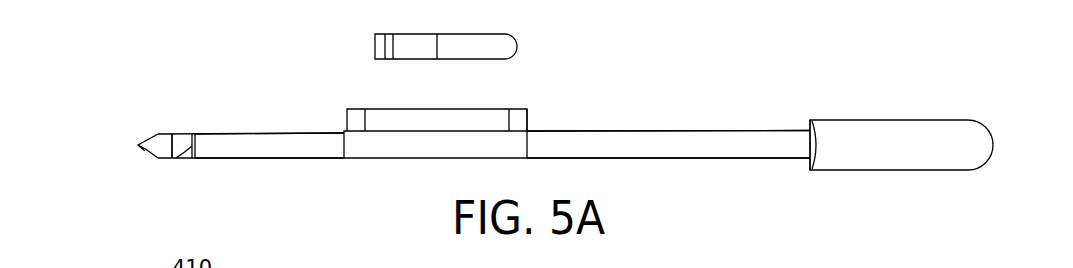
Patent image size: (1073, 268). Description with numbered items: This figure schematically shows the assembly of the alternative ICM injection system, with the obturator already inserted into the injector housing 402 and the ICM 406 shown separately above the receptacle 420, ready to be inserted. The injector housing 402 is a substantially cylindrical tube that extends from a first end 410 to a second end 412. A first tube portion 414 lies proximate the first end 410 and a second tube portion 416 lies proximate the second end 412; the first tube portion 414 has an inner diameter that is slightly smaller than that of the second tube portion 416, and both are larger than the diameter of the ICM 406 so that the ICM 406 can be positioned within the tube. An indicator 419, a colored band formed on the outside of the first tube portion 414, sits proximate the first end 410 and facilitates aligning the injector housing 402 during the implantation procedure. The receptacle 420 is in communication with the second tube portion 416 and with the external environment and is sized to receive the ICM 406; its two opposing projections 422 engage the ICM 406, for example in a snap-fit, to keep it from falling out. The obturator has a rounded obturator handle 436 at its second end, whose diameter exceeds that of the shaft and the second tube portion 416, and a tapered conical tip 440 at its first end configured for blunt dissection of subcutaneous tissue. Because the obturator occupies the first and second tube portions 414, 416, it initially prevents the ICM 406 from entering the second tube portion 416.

The injector housing 402 is at (567, 137).
The ICM 406 is at (453, 43).
The first end 410 is at (183, 133).
The second end 412 is at (787, 143).
The first tube portion 414 is at (247, 145).
The second tube portion 416 is at (640, 145).
The indicator 419 is at (173, 162).
The receptacle 420 is at (523, 115).
The projections 422 is at (422, 117).
The obturator handle 436 is at (982, 143).
The tip 440 is at (142, 147).